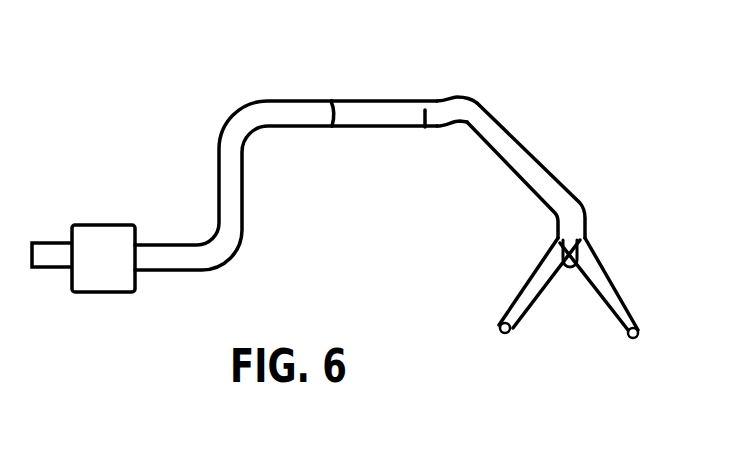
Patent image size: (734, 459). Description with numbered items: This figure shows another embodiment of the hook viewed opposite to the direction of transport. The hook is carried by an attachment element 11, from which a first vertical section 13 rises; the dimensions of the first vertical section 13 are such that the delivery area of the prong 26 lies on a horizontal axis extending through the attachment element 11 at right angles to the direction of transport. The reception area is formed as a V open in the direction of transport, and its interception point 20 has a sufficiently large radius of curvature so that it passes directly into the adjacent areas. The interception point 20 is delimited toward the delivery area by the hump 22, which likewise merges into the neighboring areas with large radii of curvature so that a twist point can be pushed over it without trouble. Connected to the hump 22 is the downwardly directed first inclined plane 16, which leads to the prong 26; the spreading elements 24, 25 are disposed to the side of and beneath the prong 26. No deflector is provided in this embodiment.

The attachment element 11 is at (97, 268).
The first vertical section 13 is at (228, 192).
The interception point 20 is at (367, 101).
The hump 22 is at (462, 113).
The first inclined plane 16 is at (517, 158).
The spreading element 24 is at (523, 305).
The spreading element 25 is at (637, 322).
The prong 26 is at (571, 250).